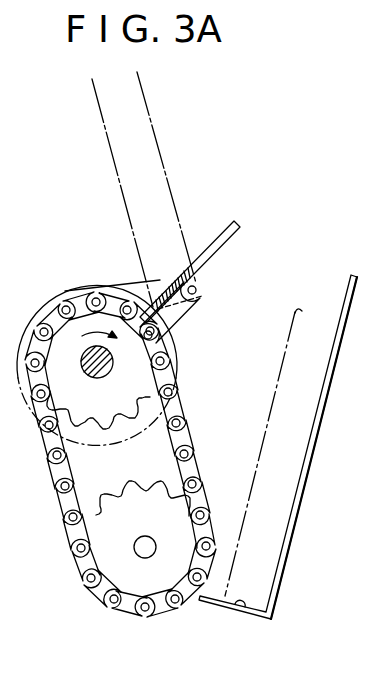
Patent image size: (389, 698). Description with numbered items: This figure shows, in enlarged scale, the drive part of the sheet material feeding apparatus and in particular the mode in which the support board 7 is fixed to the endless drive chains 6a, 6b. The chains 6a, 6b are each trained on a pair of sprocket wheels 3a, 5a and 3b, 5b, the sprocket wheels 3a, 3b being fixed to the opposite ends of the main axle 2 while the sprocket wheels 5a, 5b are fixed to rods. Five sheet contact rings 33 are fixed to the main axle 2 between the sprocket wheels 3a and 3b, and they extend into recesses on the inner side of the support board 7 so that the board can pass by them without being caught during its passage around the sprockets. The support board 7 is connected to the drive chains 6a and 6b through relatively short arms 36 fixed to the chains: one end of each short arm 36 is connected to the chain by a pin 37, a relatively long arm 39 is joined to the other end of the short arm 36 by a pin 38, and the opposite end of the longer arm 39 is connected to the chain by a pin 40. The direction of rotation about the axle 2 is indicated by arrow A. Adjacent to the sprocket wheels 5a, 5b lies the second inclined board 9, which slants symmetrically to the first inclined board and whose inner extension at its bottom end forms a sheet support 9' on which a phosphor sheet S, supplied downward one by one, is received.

The phosphor sheet S is at (150, 116).
The axle 2 is at (99, 380).
The sprocket wheel 3a is at (137, 437).
The sprocket wheel 3b is at (145, 547).
The sprocket wheel 5a is at (166, 481).
The sprocket wheel 5b is at (120, 454).
The endless drive chain 6a is at (182, 387).
The endless drive chain 6b is at (120, 454).
The support board 7 is at (221, 231).
The second inclined board 9 is at (278, 447).
The sheet support 9' is at (238, 631).
The sheet contact ring 33 is at (38, 306).
The relatively short arm 36 is at (200, 307).
The pin 37 is at (174, 340).
The pin 38 is at (197, 289).
The relatively long arm 39 is at (160, 282).
The pin 40 is at (63, 292).
The rotation direction A is at (90, 339).